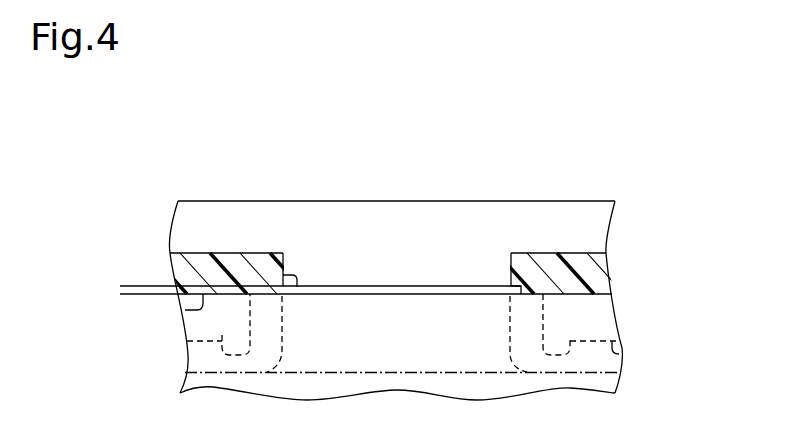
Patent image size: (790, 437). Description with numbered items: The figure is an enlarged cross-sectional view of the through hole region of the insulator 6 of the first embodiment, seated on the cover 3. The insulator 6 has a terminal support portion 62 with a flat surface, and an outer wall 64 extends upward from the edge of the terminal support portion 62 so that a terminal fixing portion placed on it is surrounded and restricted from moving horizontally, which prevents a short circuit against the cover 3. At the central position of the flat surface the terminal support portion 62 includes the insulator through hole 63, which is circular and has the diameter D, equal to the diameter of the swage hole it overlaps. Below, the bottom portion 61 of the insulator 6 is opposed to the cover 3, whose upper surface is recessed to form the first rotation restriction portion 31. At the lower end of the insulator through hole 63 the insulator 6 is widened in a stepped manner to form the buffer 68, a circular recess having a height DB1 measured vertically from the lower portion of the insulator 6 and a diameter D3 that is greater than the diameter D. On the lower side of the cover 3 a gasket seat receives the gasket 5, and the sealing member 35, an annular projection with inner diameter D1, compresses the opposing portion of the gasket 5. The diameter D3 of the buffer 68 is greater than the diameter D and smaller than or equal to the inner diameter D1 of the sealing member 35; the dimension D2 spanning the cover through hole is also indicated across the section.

The insulator 6 is at (182, 170).
The outer wall 64 is at (605, 223).
The terminal support portion 62 is at (605, 283).
The bottom portion 61 is at (185, 308).
The insulator through hole 63 is at (296, 289).
The buffer 68 is at (522, 297).
The cover 3 is at (610, 313).
The first rotation restriction portion 31 is at (613, 352).
The gasket 5 is at (610, 362).
The sealing member 35 is at (557, 355).
The height of buffer recess DB1 is at (170, 286).
The diameter of insulator through hole D is at (511, 253).
The inner diameter of sealing member D1 is at (544, 294).
The width D2 is at (570, 340).
The diameter of buffer D3 is at (529, 294).